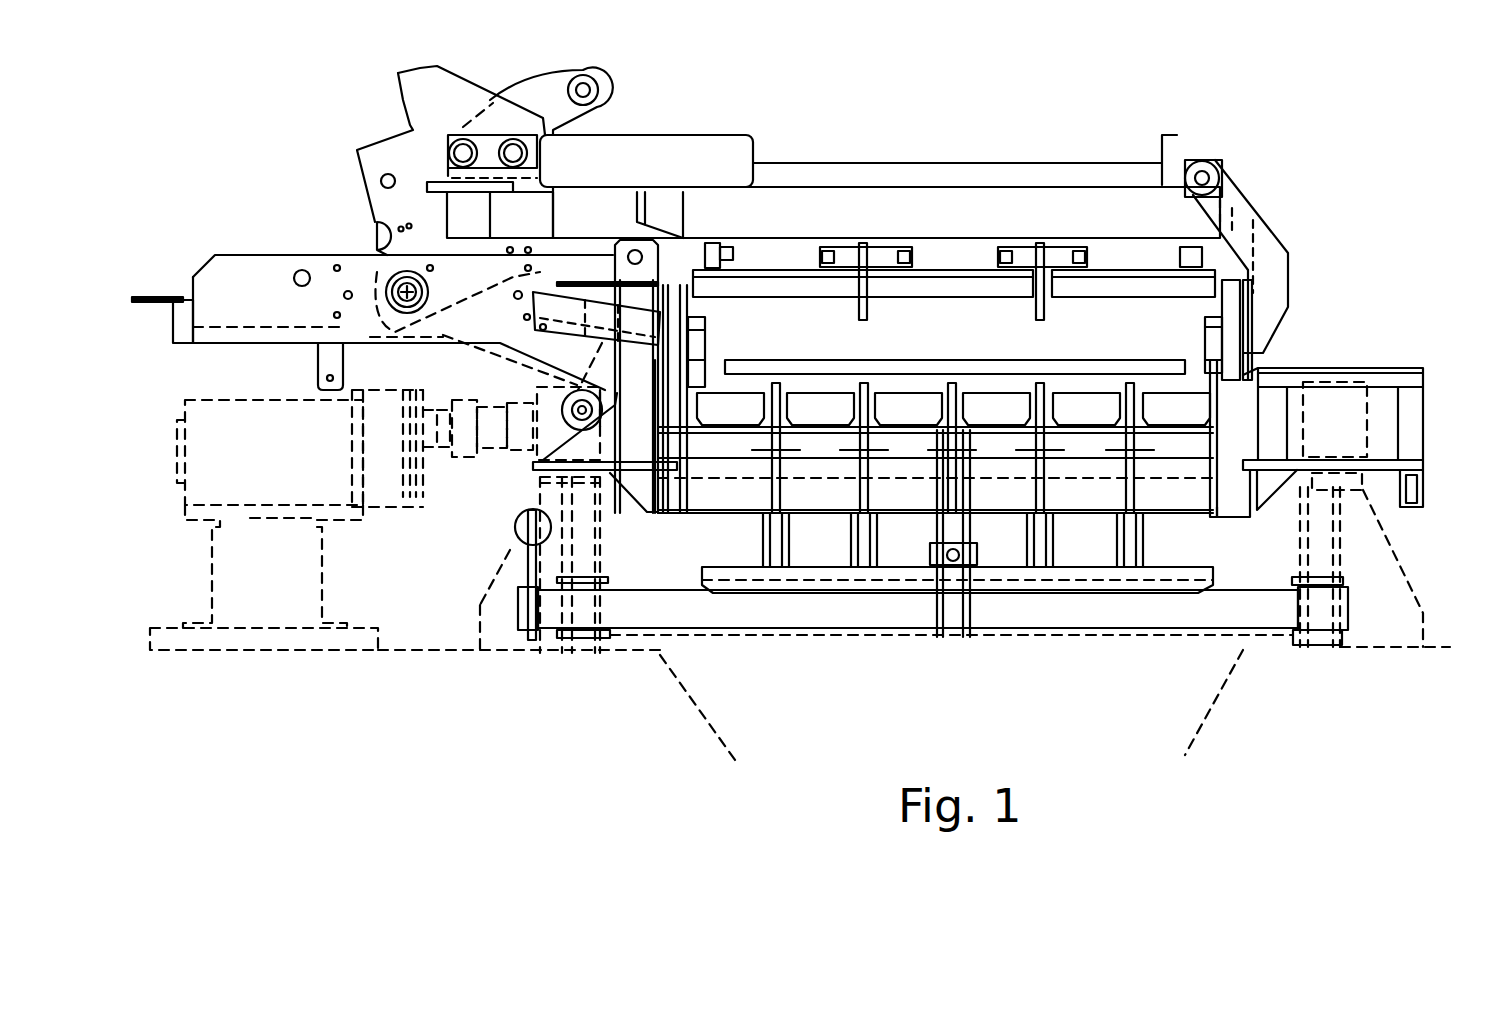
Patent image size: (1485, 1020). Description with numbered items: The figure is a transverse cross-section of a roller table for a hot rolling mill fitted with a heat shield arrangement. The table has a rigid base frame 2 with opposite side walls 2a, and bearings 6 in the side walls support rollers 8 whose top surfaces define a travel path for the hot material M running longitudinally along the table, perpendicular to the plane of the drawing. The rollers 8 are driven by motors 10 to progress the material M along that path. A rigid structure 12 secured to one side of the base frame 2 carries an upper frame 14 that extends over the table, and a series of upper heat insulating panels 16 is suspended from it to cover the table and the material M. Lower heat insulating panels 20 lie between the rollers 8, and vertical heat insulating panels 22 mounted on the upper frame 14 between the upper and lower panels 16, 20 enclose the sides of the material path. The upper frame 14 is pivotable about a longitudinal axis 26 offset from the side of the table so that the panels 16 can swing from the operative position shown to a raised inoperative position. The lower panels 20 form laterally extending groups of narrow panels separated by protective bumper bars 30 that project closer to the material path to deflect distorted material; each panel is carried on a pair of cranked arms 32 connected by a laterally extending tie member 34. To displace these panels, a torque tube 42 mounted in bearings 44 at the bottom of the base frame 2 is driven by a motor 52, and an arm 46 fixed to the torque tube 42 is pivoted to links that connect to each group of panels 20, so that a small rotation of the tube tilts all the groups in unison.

The base frame 2 is at (638, 717).
The side walls 2a is at (582, 650).
The bearings 6 is at (537, 390).
The rollers 8 is at (910, 383).
The motors 10 is at (248, 428).
The rigid structure 12 is at (242, 280).
The upper frame 14 is at (799, 200).
The upper heat insulating panels 16 is at (1110, 285).
The lower heat insulating panels 20 is at (808, 405).
The vertical heat insulating panels 22 is at (707, 345).
The axis 26 is at (398, 288).
The bumper bars 30 is at (863, 393).
The cranked arms 32 is at (858, 548).
The tie member 34 is at (783, 597).
The torque tube 42 is at (1083, 618).
The bearings 44 is at (545, 605).
The arm 46 is at (970, 620).
The motor 52 is at (523, 512).
The hot material M is at (993, 360).